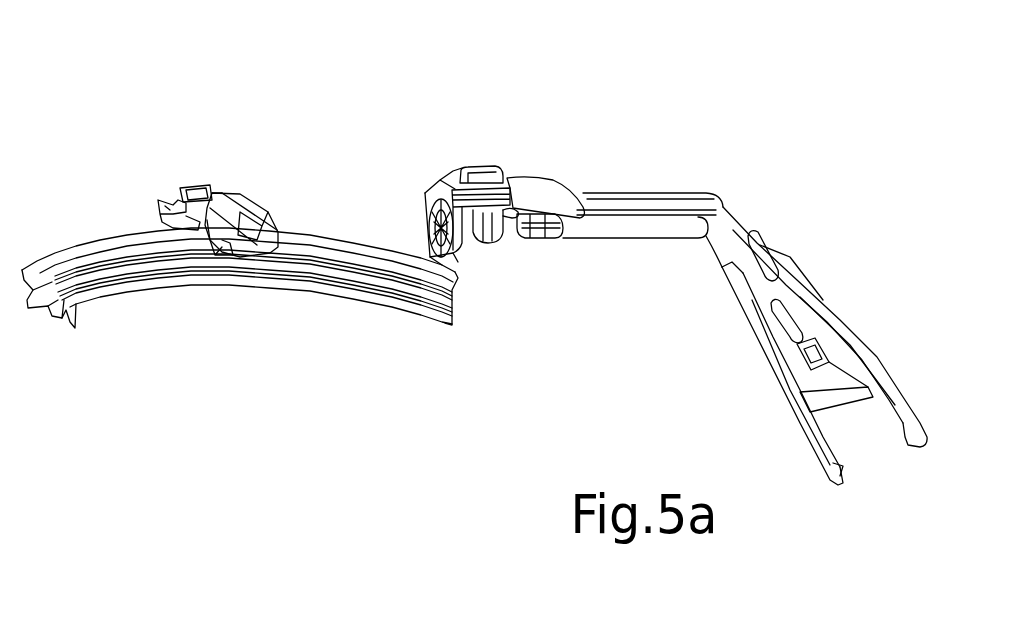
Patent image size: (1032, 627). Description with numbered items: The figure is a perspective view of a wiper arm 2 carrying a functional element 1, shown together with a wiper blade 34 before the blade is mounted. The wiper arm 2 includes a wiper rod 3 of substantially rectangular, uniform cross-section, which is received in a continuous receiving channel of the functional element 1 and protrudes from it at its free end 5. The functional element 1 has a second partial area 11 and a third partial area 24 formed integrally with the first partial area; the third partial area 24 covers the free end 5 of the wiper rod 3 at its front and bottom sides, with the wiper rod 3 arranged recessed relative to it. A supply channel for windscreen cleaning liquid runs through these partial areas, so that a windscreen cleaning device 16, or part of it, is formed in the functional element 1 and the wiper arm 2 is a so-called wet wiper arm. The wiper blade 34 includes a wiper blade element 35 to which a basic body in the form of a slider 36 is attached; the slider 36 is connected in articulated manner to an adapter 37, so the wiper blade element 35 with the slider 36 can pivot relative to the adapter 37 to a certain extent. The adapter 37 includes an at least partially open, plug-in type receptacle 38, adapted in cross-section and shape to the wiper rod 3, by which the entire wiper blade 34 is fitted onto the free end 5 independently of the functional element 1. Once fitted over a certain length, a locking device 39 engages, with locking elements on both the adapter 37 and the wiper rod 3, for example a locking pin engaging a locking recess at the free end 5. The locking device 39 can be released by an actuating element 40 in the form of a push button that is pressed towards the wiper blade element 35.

The functional element 1 is at (676, 263).
The wiper arm 2 is at (821, 266).
The wiper rod 3 is at (640, 210).
The free end 5 is at (504, 216).
The second partial area 11 is at (534, 155).
The windscreen cleaning device 16 is at (488, 299).
The third partial area 24 is at (469, 146).
The wiper blade 34 is at (202, 196).
The wiper blade element 35 is at (165, 290).
The slider 36 is at (257, 200).
The adapter 37 is at (212, 255).
The receptacle 38 is at (158, 202).
The locking device 39 is at (226, 156).
The actuating element 40 is at (200, 186).